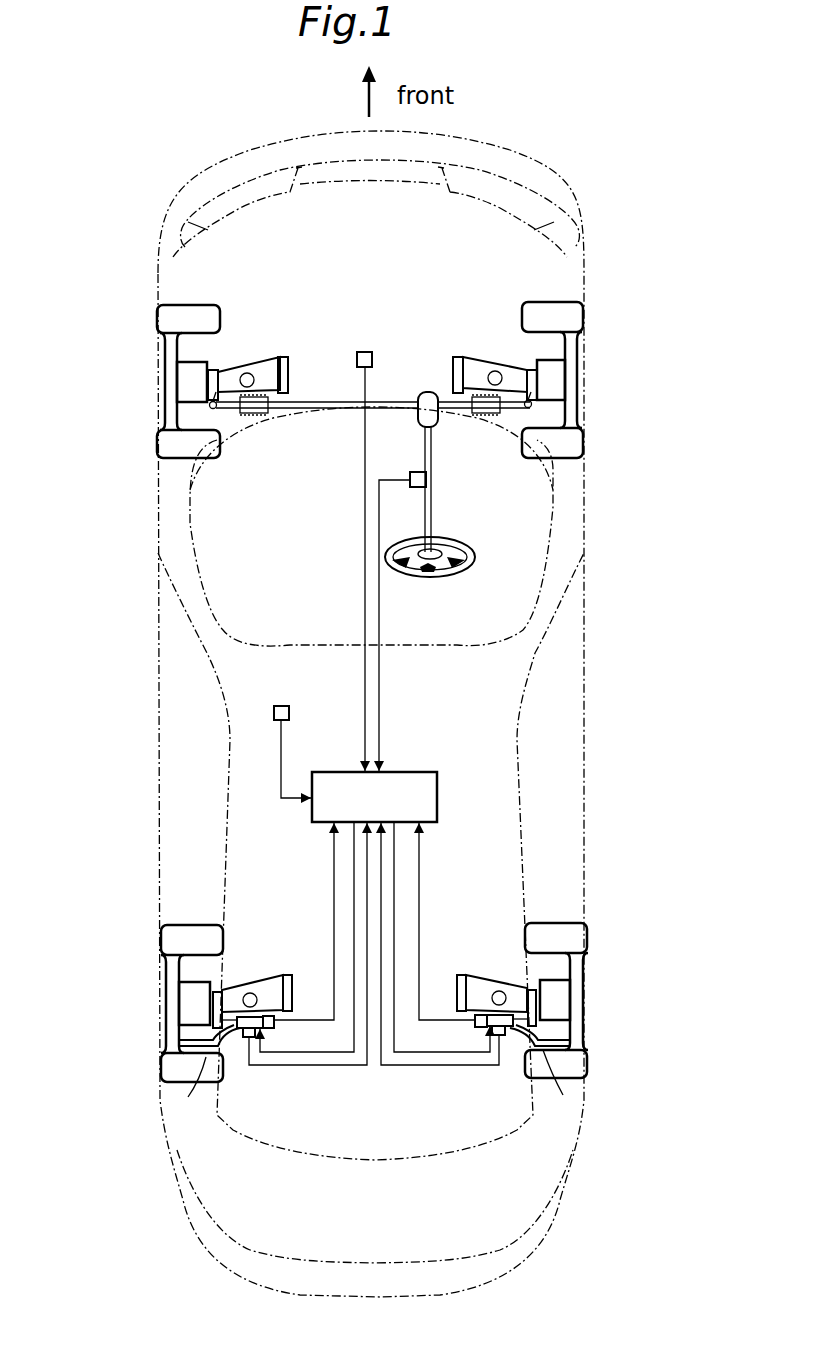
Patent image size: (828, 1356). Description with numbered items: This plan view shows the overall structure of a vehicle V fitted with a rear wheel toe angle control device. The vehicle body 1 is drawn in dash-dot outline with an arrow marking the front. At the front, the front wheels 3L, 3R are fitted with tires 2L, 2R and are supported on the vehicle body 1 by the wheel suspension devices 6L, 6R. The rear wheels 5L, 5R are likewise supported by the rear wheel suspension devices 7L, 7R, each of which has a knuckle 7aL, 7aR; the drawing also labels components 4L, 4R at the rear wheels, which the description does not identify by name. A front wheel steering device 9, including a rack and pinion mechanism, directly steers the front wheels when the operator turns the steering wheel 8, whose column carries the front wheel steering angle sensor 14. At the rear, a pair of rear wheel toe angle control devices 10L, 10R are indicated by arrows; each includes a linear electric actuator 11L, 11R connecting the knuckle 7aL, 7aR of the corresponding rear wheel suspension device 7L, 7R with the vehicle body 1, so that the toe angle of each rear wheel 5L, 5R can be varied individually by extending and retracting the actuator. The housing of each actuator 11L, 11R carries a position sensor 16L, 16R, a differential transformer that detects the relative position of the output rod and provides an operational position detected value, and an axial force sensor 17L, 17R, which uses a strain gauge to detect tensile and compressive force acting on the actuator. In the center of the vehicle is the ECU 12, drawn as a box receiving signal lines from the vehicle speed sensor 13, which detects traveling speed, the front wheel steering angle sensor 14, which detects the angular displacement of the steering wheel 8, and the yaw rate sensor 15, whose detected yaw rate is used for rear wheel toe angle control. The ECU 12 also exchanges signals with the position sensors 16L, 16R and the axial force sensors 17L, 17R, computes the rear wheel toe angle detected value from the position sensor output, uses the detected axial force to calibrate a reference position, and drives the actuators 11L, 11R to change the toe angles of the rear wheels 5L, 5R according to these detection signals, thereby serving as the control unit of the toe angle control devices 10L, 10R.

The vehicle V is at (597, 125).
The vehicle body 1 is at (590, 243).
The tire 2L is at (168, 450).
The tire 2R is at (575, 450).
The front wheel 3L is at (165, 345).
The front wheel 3R is at (577, 343).
The left rear wheel 4L is at (172, 1065).
The right rear wheel 4R is at (578, 1065).
The rear wheel 5L is at (170, 988).
The rear wheel 5R is at (582, 988).
The wheel suspension device 6L is at (225, 360).
The wheel suspension device 6R is at (517, 360).
The rear wheel suspension device 7L is at (230, 978).
The rear wheel suspension device 7R is at (518, 978).
The knuckle 7aL is at (212, 1043).
The knuckle 7aR is at (567, 1040).
The steering wheel 8 is at (438, 572).
The front wheel steering device 9 is at (397, 397).
The rear wheel toe angle control device 10L is at (203, 890).
The rear wheel toe angle control device 10R is at (560, 890).
The linear electric actuator 11L is at (190, 1091).
The linear electric actuator 11R is at (564, 1085).
The ECU 12 is at (424, 773).
The vehicle speed sensor 13 is at (364, 352).
The front wheel steering angle sensor 14 is at (417, 472).
The yaw rate sensor 15 is at (282, 706).
The position sensor 16L is at (240, 1030).
The position sensor 16R is at (502, 1036).
The axial force sensor 17L is at (268, 1016).
The axial force sensor 17R is at (481, 1015).